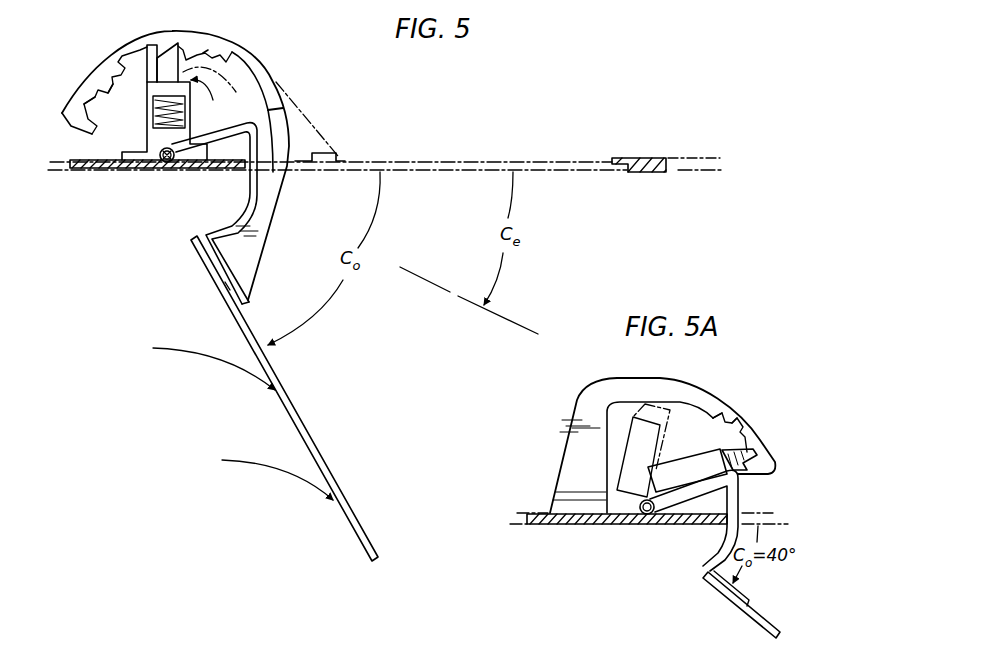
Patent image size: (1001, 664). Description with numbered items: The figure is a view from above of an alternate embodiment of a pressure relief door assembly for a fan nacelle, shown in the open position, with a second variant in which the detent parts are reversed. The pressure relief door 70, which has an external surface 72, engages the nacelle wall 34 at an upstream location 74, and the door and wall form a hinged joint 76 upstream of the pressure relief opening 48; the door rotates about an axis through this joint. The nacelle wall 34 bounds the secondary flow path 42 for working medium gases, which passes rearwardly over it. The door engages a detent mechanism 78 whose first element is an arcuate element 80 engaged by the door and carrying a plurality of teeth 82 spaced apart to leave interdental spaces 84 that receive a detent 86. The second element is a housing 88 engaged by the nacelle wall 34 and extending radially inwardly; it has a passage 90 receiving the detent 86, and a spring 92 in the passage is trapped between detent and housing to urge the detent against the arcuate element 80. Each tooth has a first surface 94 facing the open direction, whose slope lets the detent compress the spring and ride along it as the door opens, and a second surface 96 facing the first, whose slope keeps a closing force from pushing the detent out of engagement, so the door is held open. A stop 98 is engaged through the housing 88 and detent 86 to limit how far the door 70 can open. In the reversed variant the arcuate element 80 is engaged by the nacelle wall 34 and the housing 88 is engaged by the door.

In FIG. 5, the nacelle wall 34 is at (666, 170).
In FIG. 5, the pressure relief opening 48 is at (614, 160).
In FIG. 5, the pressure relief door 70 is at (300, 410).
In FIG. 5, the external surface 72 is at (230, 324).
In FIG. 5A, the external surface 72 is at (715, 554).
In FIG. 5, the upstream location 74 is at (200, 169).
In FIG. 5, the hinged joint 76 is at (176, 164).
In FIG. 5A, the hinged joint 76 is at (647, 507).
In FIG. 5, the detent mechanism 78 is at (215, 96).
In FIG. 5, the arcuate element 80 is at (243, 71).
In FIG. 5A, the arcuate element 80 is at (695, 392).
In FIG. 5, the teeth 82 is at (207, 53).
In FIG. 5, the interdental spaces 84 is at (221, 57).
In FIG. 5, the detent 86 is at (176, 75).
In FIG. 5A, the detent 86 is at (744, 452).
In FIG. 5, the housing 88 is at (188, 116).
In FIG. 5A, the housing 88 is at (672, 450).
In FIG. 5, the passage 90 is at (153, 97).
In FIG. 5, the spring 92 is at (158, 118).
In FIG. 5, the first surface 94 is at (92, 100).
In FIG. 5A, the first surface 94 is at (715, 426).
In FIG. 5, the second surface 96 is at (104, 86).
In FIG. 5A, the second surface 96 is at (660, 420).
In FIG. 5, the stop 98 is at (150, 58).
In FIG. 5, the secondary flow path 42 is at (178, 348).